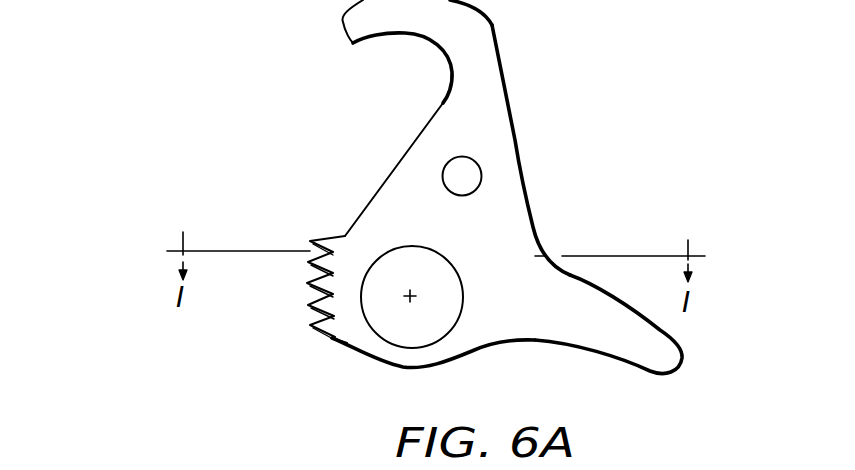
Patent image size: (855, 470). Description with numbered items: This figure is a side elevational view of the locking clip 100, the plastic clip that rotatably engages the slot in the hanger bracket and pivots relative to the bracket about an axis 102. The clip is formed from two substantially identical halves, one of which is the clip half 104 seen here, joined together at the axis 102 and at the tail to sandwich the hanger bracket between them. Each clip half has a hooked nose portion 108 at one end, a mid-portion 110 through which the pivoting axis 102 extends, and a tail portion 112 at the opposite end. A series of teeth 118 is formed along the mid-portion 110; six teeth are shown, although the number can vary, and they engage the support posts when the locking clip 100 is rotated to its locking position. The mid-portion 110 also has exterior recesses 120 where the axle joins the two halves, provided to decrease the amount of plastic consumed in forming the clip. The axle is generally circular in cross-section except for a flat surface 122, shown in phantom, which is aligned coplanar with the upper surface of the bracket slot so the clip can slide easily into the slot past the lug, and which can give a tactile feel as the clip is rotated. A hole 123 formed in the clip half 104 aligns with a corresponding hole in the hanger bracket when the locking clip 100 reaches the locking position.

The locking clip 100 is at (522, 105).
The axis 102 is at (416, 296).
The clip half 104 is at (536, 210).
The hooked nose portion 108 is at (353, 45).
The mid-portion 110 is at (360, 213).
The tail portion 112 is at (682, 347).
The teeth 118 is at (317, 288).
The exterior recesses 120 is at (398, 335).
The flat surface 122 is at (445, 260).
The hole 123 is at (482, 173).